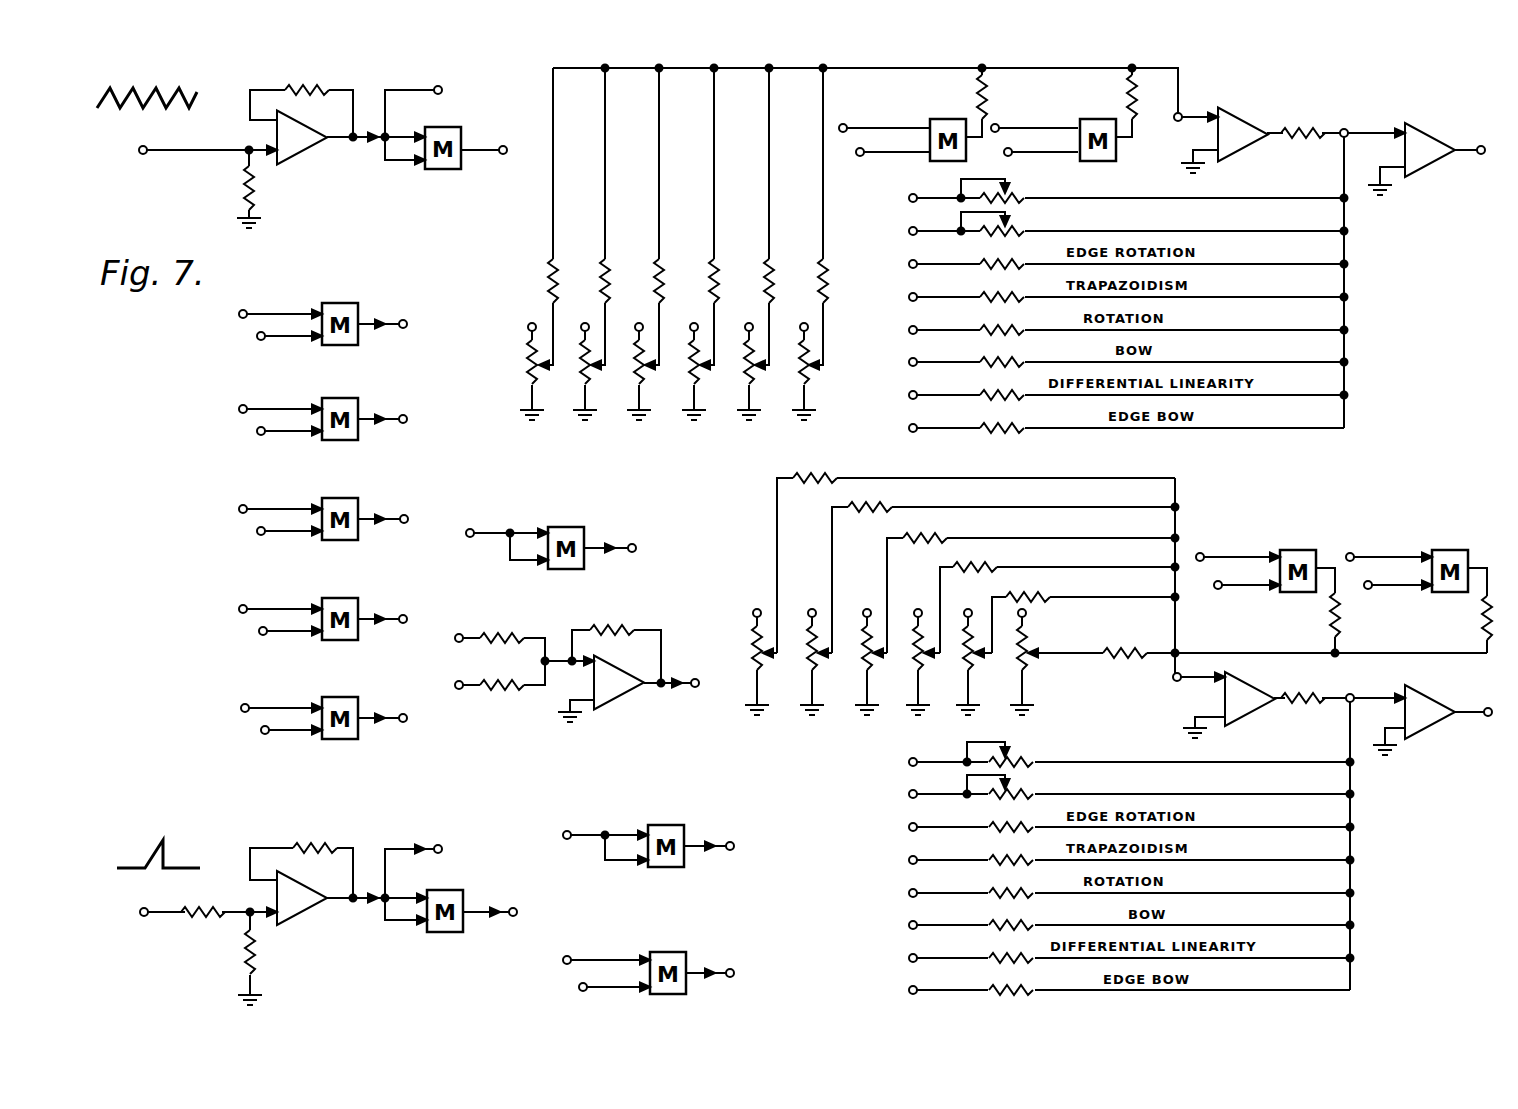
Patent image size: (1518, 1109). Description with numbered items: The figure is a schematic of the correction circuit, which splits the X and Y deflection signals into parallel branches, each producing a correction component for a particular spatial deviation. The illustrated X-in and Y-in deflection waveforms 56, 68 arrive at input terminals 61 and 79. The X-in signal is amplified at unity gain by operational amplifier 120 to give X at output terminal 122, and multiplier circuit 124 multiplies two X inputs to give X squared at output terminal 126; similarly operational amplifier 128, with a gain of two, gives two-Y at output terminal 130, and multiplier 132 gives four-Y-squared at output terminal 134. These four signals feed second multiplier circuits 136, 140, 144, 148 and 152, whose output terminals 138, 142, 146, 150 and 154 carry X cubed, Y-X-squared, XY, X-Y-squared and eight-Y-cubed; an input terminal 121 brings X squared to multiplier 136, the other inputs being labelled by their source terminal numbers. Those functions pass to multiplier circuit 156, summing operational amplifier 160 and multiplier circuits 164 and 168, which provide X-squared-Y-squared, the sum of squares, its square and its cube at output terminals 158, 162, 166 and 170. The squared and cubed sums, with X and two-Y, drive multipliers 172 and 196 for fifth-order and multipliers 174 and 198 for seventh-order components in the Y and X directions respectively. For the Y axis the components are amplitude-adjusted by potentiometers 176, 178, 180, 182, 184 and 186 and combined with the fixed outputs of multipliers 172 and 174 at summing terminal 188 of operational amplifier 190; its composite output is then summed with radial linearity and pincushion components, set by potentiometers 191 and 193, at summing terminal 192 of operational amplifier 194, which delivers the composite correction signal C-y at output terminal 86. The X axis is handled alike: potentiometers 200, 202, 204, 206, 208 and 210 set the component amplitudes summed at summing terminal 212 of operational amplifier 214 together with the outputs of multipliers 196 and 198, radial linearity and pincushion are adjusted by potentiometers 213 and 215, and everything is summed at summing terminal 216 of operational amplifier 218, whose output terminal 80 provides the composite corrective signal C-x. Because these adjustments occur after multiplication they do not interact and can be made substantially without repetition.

The sawtooth X input waveform 56 is at (163, 94).
The input terminal 61 is at (147, 153).
The Y input waveform 68 is at (153, 845).
The input terminal 79 is at (150, 918).
The output terminal 80 is at (1482, 155).
The output terminal 86 is at (1488, 708).
The operational amplifier 120 is at (310, 150).
The X squared input terminal 121 is at (239, 315).
The output terminal 122 is at (445, 88).
The multiplier circuit 124 is at (441, 126).
The output terminal 126 is at (503, 155).
The operational amplifier 128 is at (312, 915).
The output terminal 130 is at (257, 433).
The multiplier 132 is at (452, 933).
The output terminal 134 is at (259, 633).
The second multiplier circuit 136 is at (346, 303).
The output terminal 138 is at (404, 328).
The second multiplier circuit 140 is at (346, 398).
The output terminal 142 is at (405, 424).
The second multiplier circuit 144 is at (346, 498).
The output terminal 146 is at (406, 522).
The second multiplier circuit 148 is at (346, 598).
The output terminal 150 is at (405, 622).
The second multiplier circuit 152 is at (346, 697).
The output terminal 154 is at (405, 723).
The multiplier circuit 156 is at (565, 527).
The output terminal 158 is at (632, 552).
The summing operational amplifier 160 is at (612, 706).
The output terminal 162 is at (565, 840).
The multiplier circuit 164 is at (695, 690).
The output terminal 166 is at (730, 850).
The multiplier circuit 168 is at (670, 952).
The output terminal 170 is at (730, 977).
The multiplier circuit 172 is at (1293, 550).
The multiplier circuit 174 is at (1448, 550).
The potentiometer 176 is at (762, 668).
The potentiometer 178 is at (817, 668).
The potentiometer 180 is at (872, 668).
The potentiometer 182 is at (924, 668).
The potentiometer 184 is at (974, 668).
The potentiometer 186 is at (1028, 668).
The summing terminal 188 is at (1175, 682).
The operational amplifier 190 is at (1250, 692).
The Y radial linearity potentiometer 191 is at (1016, 752).
The summing terminal 192 is at (1352, 694).
The Y pincushion potentiometer 193 is at (1026, 797).
The operational amplifier 194 is at (1432, 736).
The multiplier circuit 196 is at (930, 120).
The multiplier circuit 198 is at (1086, 120).
The potentiometer 200 is at (529, 380).
The potentiometer 202 is at (582, 376).
The potentiometer 204 is at (636, 376).
The potentiometer 206 is at (691, 376).
The potentiometer 208 is at (746, 376).
The potentiometer 210 is at (801, 376).
The summing terminal 212 is at (1185, 111).
The potentiometer 213 is at (1014, 192).
The operational amplifier 214 is at (1246, 116).
The potentiometer 215 is at (1006, 237).
The summing terminal 216 is at (1344, 128).
The operational amplifier 218 is at (1425, 120).